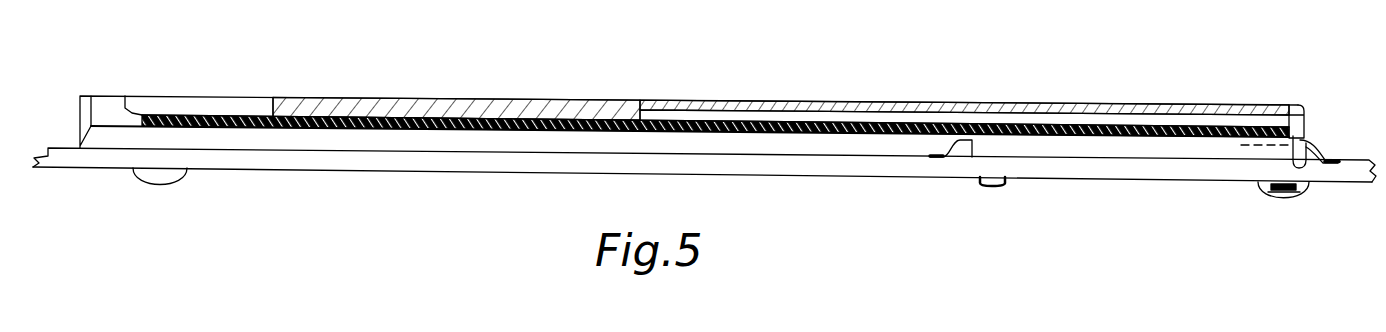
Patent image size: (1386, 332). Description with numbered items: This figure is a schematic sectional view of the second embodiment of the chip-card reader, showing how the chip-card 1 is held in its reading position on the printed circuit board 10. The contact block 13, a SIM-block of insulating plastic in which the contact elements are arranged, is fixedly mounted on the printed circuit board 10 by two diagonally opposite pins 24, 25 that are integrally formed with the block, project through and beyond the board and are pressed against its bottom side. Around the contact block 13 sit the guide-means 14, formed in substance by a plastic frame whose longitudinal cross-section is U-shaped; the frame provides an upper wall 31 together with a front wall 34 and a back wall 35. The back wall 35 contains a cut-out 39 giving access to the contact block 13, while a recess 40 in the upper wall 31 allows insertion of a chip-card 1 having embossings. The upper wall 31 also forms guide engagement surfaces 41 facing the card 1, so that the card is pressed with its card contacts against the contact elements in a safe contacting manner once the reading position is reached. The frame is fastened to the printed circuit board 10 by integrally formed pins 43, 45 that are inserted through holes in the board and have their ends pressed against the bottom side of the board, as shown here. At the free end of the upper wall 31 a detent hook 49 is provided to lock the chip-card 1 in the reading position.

The chip-card 1 is at (380, 126).
The printed circuit board 10 is at (87, 158).
The contact block 13 is at (1152, 148).
The guide-means 14 is at (820, 177).
The pin 24 is at (997, 187).
The pin 25 is at (1270, 192).
The upper wall 31 is at (680, 98).
The front wall 34 is at (80, 108).
The back wall 35 is at (1304, 117).
The cut-out 39 is at (1308, 150).
The recess 40 is at (761, 117).
The guide engagement surfaces 41 is at (463, 125).
The pin 43 is at (1297, 192).
The pin 45 is at (170, 182).
The detent hook 49 is at (134, 107).